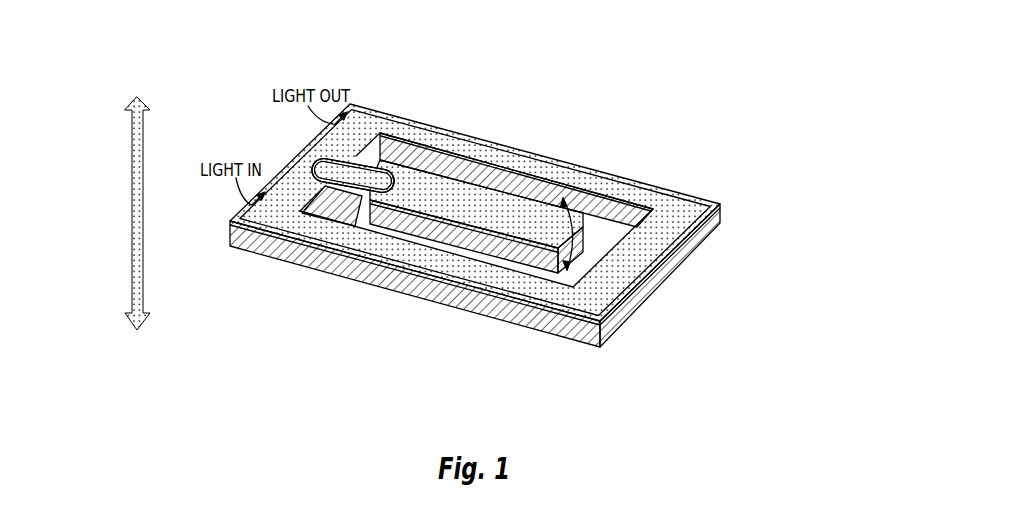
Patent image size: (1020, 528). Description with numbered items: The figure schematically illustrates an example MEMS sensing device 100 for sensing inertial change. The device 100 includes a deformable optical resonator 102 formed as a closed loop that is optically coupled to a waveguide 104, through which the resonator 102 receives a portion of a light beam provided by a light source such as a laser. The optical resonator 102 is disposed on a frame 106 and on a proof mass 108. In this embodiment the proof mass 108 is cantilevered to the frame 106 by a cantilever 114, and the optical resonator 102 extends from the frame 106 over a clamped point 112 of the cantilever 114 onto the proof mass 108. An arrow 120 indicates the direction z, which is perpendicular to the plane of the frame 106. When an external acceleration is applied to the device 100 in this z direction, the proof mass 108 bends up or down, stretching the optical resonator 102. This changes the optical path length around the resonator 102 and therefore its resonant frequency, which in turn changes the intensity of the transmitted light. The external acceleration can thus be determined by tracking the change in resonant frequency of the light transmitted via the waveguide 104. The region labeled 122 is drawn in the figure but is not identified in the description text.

The MEMS sensing device 100 is at (740, 86).
The deformable optical resonator 102 is at (357, 157).
The waveguide 104 is at (307, 163).
The frame 106 is at (380, 285).
The proof mass 108 is at (503, 250).
The clamped point 112 is at (320, 187).
The cantilever 114 is at (360, 200).
The arrow 120 is at (124, 275).
The trench wall 122 is at (603, 200).